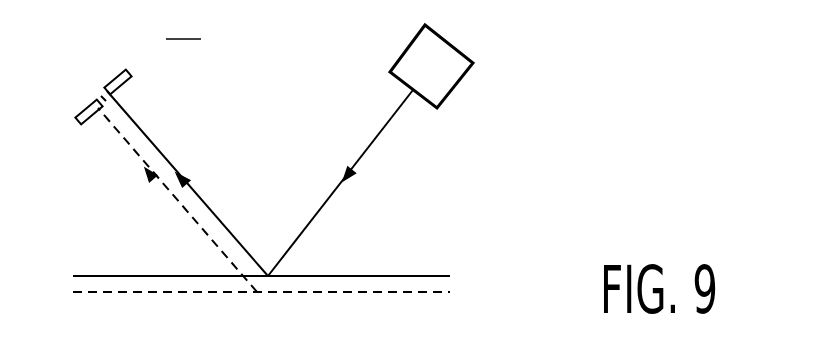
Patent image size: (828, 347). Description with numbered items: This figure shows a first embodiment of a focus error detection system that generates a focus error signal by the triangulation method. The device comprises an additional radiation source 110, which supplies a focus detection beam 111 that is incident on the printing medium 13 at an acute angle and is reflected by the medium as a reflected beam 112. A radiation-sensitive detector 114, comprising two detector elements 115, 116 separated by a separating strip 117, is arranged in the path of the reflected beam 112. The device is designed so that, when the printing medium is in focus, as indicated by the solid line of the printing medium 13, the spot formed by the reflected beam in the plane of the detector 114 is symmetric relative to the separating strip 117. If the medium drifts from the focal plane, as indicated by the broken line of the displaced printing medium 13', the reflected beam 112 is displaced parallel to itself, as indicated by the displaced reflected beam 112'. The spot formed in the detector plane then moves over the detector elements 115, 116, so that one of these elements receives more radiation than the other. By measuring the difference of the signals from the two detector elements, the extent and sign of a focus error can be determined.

The radiation source 110 is at (455, 83).
The focus detection beam 111 is at (335, 192).
The reflected beam 112 is at (187, 183).
The displaced reflected beam 112' is at (172, 200).
The printing medium 13 is at (286, 259).
The printing medium out of focus 13' is at (288, 307).
The radiation-sensitive detector 114 is at (183, 26).
The detector element 115 is at (80, 125).
The detector element 116 is at (128, 78).
The separating strip 117 is at (104, 92).